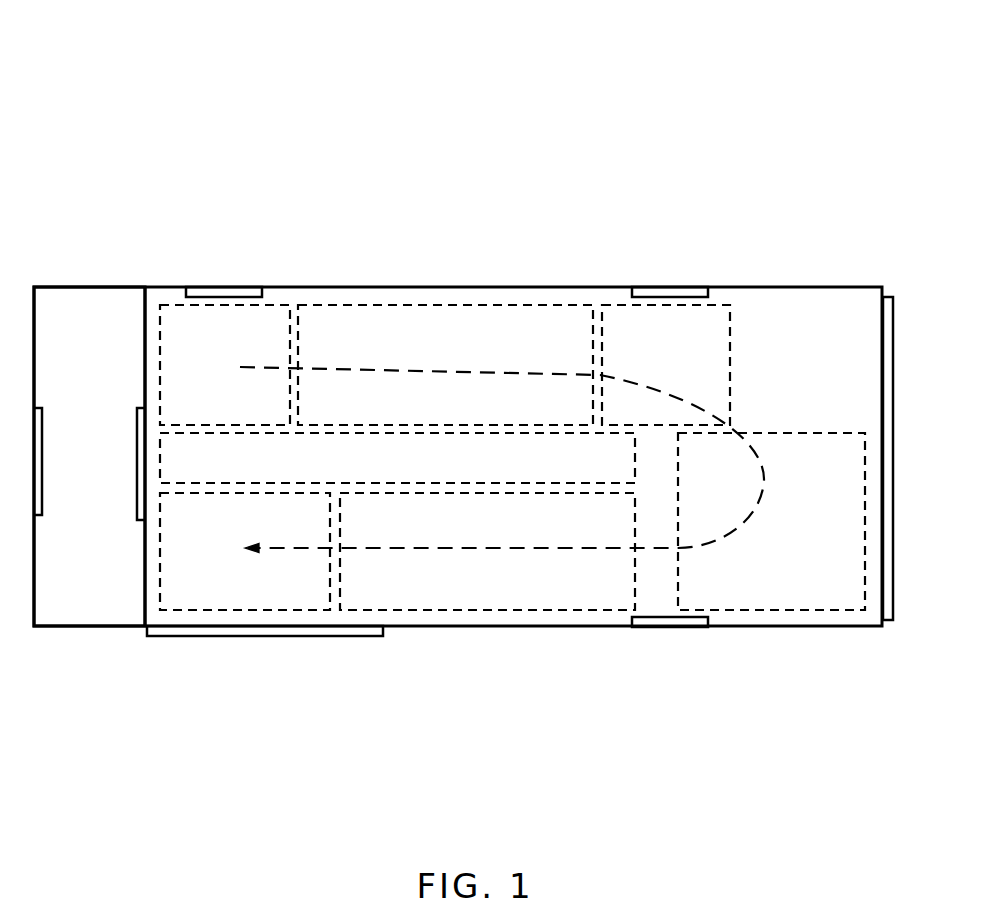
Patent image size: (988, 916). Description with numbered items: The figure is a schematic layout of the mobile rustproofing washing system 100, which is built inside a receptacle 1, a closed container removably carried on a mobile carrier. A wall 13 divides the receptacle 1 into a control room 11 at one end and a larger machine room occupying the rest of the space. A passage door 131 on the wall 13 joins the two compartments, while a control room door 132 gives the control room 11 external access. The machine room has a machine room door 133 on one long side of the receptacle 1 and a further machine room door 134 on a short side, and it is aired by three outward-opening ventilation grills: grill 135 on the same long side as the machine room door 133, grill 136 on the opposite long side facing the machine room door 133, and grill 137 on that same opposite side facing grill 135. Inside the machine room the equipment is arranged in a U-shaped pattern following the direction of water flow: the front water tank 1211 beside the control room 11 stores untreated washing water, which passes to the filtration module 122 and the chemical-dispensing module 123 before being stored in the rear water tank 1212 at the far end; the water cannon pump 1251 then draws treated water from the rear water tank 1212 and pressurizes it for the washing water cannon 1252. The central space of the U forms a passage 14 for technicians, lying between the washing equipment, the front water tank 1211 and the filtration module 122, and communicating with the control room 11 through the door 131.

The mobile rustproofing washing system 100 is at (71, 48).
The receptacle 1 is at (815, 278).
The control room 11 is at (88, 364).
The wall 13 is at (145, 552).
The passage 14 is at (316, 451).
The filtration module 122 is at (446, 323).
The chemical-dispensing module 123 is at (685, 322).
The passage door 131 is at (138, 520).
The control room door 132 is at (40, 515).
The machine room door 133 is at (310, 632).
The machine room door 134 is at (885, 622).
The ventilation grill 135 is at (668, 627).
The ventilation grill 136 is at (228, 287).
The ventilation grill 137 is at (668, 287).
The front water tank 1211 is at (207, 366).
The rear water tank 1212 is at (776, 589).
The water cannon pump 1251 is at (483, 596).
The washing water cannon 1252 is at (200, 596).